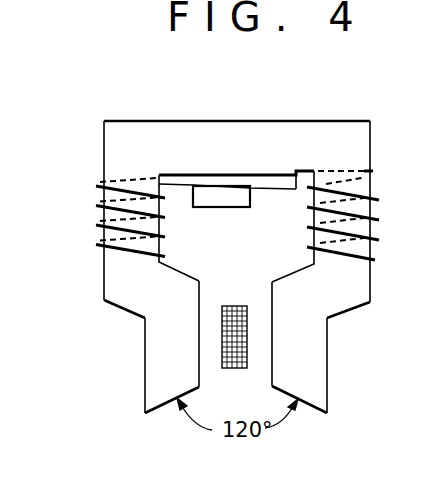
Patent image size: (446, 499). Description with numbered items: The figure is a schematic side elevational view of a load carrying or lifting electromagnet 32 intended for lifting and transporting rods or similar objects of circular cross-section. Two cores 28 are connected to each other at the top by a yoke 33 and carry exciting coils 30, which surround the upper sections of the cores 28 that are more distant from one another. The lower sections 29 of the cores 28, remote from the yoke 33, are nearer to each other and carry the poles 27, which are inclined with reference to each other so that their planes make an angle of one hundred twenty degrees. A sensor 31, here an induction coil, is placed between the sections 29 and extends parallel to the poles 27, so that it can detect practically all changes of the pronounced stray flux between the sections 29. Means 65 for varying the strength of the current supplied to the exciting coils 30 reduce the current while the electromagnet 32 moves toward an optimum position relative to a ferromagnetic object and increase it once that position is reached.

The poles 27 is at (163, 413).
The cores 28 is at (118, 258).
The sections of the cores 29 is at (152, 366).
The exciting coils 30 is at (122, 206).
The sensor 31 is at (243, 312).
The lifting electromagnet 32 is at (336, 118).
The yoke 33 is at (250, 138).
The means for varying the strength of current 65 is at (216, 198).